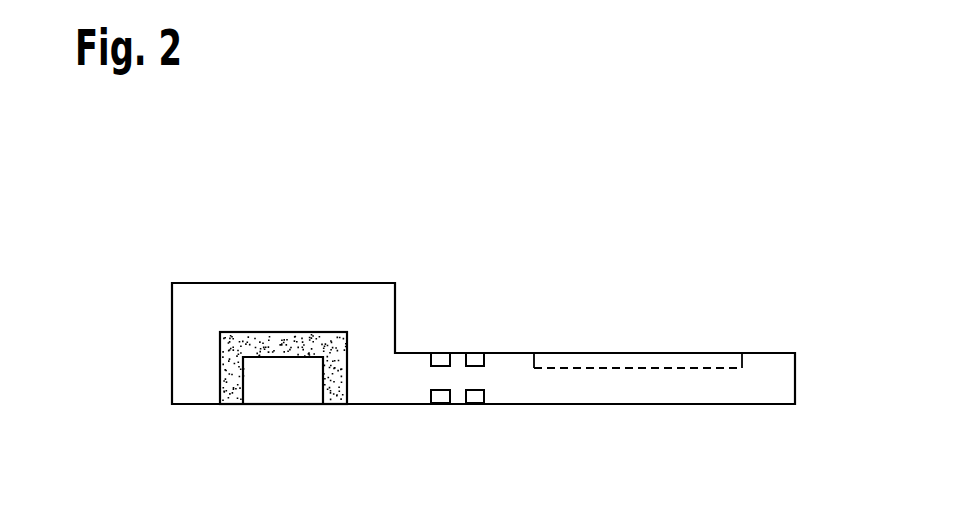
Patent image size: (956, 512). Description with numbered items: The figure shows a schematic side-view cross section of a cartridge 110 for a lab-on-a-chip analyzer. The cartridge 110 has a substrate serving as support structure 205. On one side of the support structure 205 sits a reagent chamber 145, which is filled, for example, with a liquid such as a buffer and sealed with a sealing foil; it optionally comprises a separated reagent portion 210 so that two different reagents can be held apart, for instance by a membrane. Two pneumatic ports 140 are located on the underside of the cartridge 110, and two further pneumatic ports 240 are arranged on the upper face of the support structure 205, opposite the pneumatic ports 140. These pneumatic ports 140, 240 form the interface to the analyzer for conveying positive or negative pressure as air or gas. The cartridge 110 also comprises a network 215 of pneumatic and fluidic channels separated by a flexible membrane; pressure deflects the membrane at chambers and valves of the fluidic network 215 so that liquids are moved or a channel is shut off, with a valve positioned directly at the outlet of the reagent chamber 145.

The cartridge 110 is at (204, 237).
The support structure 205 is at (355, 283).
The reagent chamber 145 is at (245, 344).
The separated reagent portion 210 is at (245, 371).
The further pneumatic port 240 is at (477, 360).
The pneumatic port 140 is at (477, 398).
The network of pneumatic and fluidic channels 215 is at (628, 352).